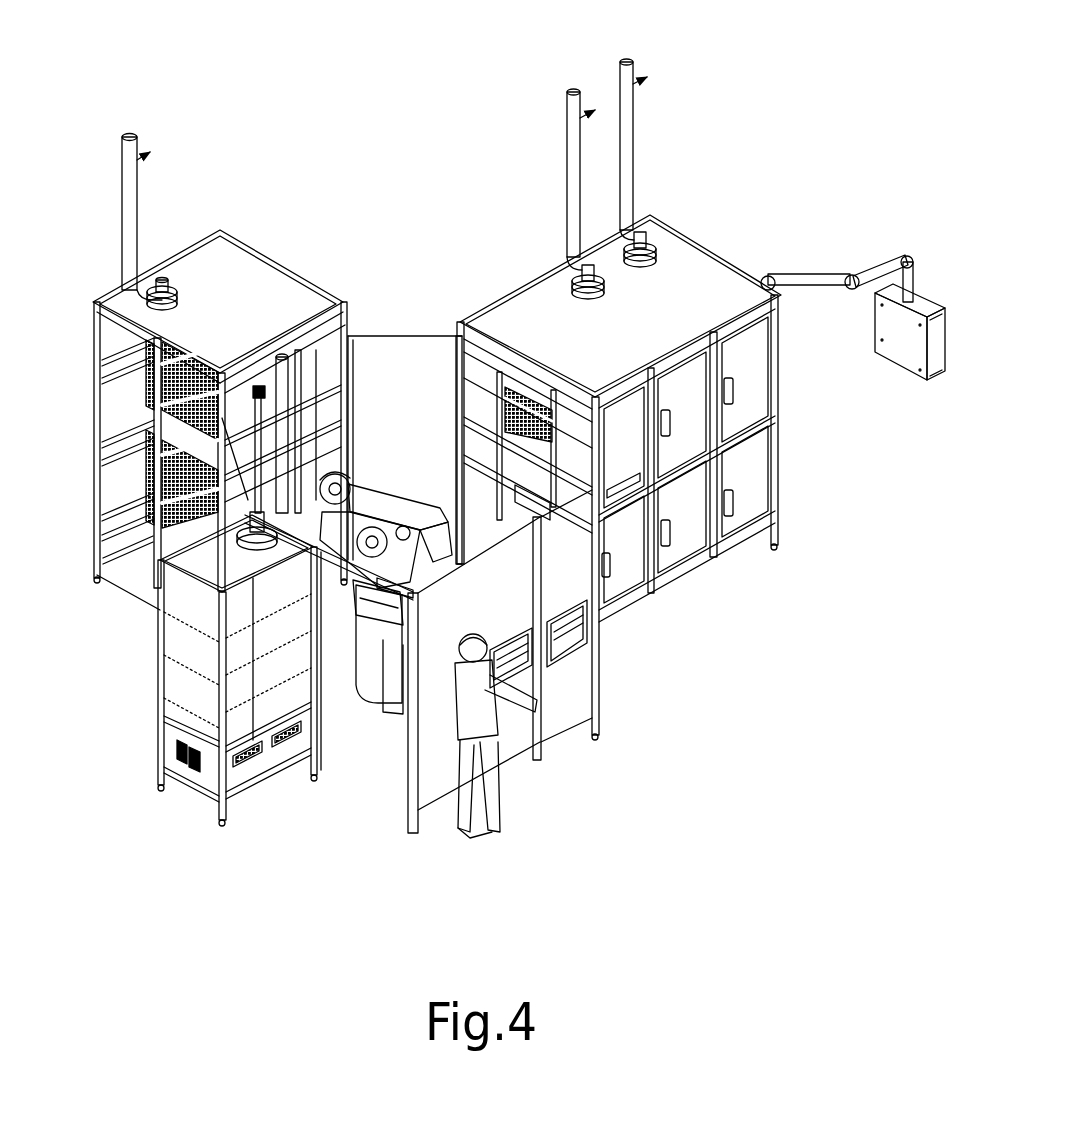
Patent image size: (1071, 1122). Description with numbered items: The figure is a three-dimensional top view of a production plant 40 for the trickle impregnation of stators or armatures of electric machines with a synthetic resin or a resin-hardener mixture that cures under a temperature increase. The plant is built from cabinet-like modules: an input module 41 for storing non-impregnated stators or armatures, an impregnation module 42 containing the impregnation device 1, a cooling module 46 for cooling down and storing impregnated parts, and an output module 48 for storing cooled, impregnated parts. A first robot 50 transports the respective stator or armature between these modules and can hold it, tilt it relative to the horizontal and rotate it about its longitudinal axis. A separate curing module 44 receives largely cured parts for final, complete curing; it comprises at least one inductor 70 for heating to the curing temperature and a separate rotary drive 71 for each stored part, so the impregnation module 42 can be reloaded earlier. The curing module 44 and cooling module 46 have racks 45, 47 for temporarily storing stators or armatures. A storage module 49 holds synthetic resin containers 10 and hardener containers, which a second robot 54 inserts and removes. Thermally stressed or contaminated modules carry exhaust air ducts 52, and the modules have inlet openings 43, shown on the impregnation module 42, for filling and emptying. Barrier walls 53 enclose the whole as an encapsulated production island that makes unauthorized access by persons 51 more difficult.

The production plant 40 is at (487, 427).
The impregnation device 1 is at (626, 477).
The impregnation module 42 is at (626, 477).
The inlet openings 43 is at (500, 410).
The curing module 44 is at (221, 384).
The rack 45 is at (124, 421).
The cooling module 46 is at (194, 670).
The rack 47 is at (185, 635).
The output module 48 is at (518, 677).
The storage module 49 is at (745, 388).
The first robot 50 is at (392, 484).
The persons 51 is at (503, 740).
The exhaust air ducts 52 is at (122, 196).
The barrier walls 53 is at (519, 584).
The second robot 54 is at (809, 275).
The synthetic resin container 10 is at (912, 375).
The inductor 70 is at (148, 495).
The rotary drive 71 is at (165, 372).
The input module 41 is at (560, 638).